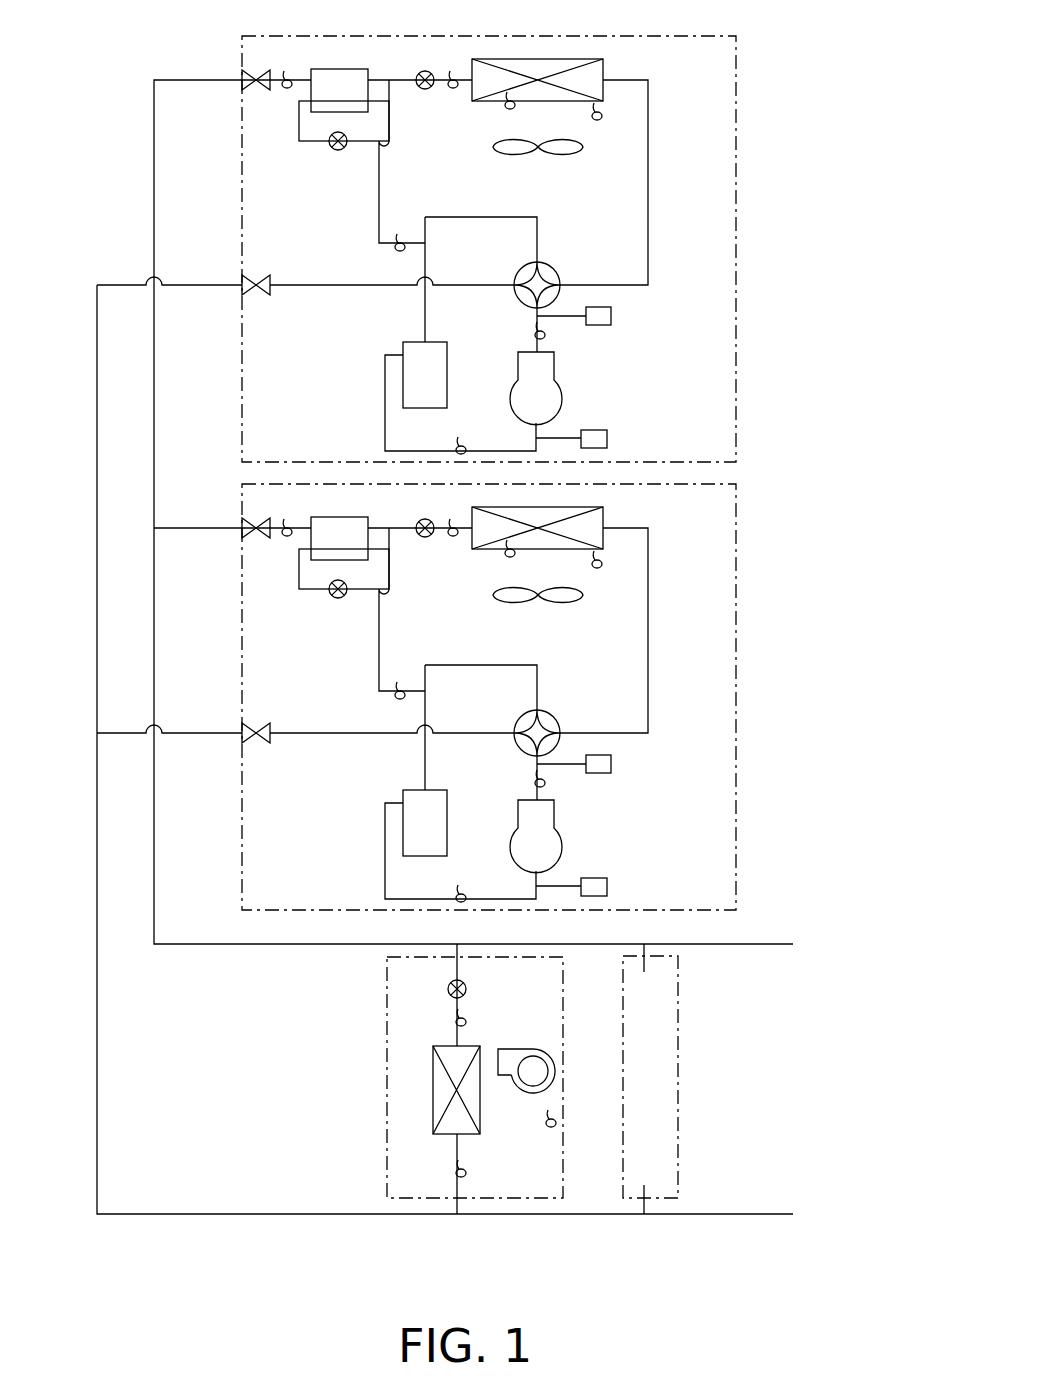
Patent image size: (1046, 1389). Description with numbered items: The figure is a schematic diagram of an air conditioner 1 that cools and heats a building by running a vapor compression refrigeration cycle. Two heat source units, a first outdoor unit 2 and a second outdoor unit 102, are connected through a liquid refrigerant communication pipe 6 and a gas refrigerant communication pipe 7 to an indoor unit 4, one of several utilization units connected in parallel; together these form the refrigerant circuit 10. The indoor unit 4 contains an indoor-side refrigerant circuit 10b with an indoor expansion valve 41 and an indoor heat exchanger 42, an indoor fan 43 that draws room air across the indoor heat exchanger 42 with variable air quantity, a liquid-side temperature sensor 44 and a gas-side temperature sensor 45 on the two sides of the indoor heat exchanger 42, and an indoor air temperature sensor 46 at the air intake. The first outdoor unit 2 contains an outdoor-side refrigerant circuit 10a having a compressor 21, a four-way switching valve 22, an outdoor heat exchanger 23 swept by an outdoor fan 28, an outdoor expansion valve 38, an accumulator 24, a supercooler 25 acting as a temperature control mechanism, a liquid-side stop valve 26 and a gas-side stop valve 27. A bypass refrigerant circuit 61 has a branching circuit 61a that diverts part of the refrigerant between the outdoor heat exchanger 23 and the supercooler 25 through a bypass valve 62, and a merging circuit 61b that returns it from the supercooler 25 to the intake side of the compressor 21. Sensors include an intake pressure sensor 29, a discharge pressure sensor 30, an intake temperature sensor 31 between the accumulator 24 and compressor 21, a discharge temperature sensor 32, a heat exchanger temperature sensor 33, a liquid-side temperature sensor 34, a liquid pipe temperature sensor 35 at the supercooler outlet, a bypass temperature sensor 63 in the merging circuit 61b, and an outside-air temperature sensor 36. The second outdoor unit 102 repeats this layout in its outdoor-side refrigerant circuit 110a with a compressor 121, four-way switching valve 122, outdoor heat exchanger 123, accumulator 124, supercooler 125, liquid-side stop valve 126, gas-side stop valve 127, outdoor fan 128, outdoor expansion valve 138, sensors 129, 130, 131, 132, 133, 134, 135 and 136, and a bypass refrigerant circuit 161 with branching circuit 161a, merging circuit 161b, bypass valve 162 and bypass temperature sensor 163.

The air conditioner 1 is at (135, 56).
The first outdoor unit 2 is at (740, 80).
The second outdoor unit 102 is at (507, 697).
The indoor unit 4 is at (405, 1198).
The liquid refrigerant communication pipe 6 is at (195, 944).
The gas refrigerant communication pipe 7 is at (235, 1214).
The refrigerant circuit 10 is at (148, 242).
The outdoor-side refrigerant circuit 10a is at (687, 133).
The outdoor-side refrigerant circuit 110a is at (494, 693).
The indoor-side refrigerant circuit 10b is at (487, 1117).
The compressor 21 is at (517, 362).
The four-way switching valve 22 is at (519, 268).
The outdoor heat exchanger 23 is at (600, 57).
The accumulator 24 is at (412, 341).
The supercooler 25 is at (330, 69).
The liquid-side stop valve 26 is at (258, 88).
The gas-side stop valve 27 is at (258, 294).
The outdoor fan 28 is at (588, 152).
The intake pressure sensor 29 is at (598, 430).
The discharge pressure sensor 30 is at (604, 325).
The intake temperature sensor 31 is at (466, 447).
The discharge temperature sensor 32 is at (546, 338).
The heat exchanger temperature sensor 33 is at (505, 108).
The liquid-side temperature sensor 34 is at (451, 89).
The liquid pipe temperature sensor 35 is at (287, 89).
The outside-air temperature sensor 36 is at (602, 114).
The outdoor expansion valve 38 is at (425, 71).
The bypass refrigerant circuit 61 is at (397, 174).
The branching circuit 61a is at (321, 146).
The merging circuit 61b is at (381, 207).
The bypass valve 62 is at (346, 148).
The bypass temperature sensor 63 is at (394, 250).
The compressor 121 is at (509, 820).
The four-way switching valve 122 is at (507, 717).
The outdoor heat exchanger 123 is at (581, 518).
The accumulator 124 is at (406, 799).
The supercooler 125 is at (309, 522).
The liquid-side stop valve 126 is at (225, 556).
The gas-side stop valve 127 is at (268, 765).
The outdoor fan 128 is at (600, 621).
The intake pressure sensor 129 is at (608, 862).
The discharge pressure sensor 130 is at (626, 781).
The intake temperature sensor 131 is at (485, 879).
The discharge temperature sensor 132 is at (575, 797).
The heat exchanger temperature sensor 133 is at (485, 568).
The liquid-side temperature sensor 134 is at (430, 560).
The liquid pipe temperature sensor 135 is at (283, 573).
The outside-air temperature sensor 136 is at (655, 548).
The outdoor expansion valve 138 is at (397, 511).
The bypass refrigerant circuit 161 is at (388, 623).
The branching circuit 161a is at (333, 609).
The merging circuit 161b is at (439, 609).
The bypass valve 162 is at (353, 613).
The bypass temperature sensor 163 is at (360, 700).
The indoor expansion valve 41 is at (450, 985).
The indoor heat exchanger 42 is at (440, 1046).
The indoor fan 43 is at (530, 1045).
The liquid-side temperature sensor 44 is at (464, 1018).
The gas-side temperature sensor 45 is at (465, 1180).
The indoor air temperature sensor 46 is at (556, 1128).